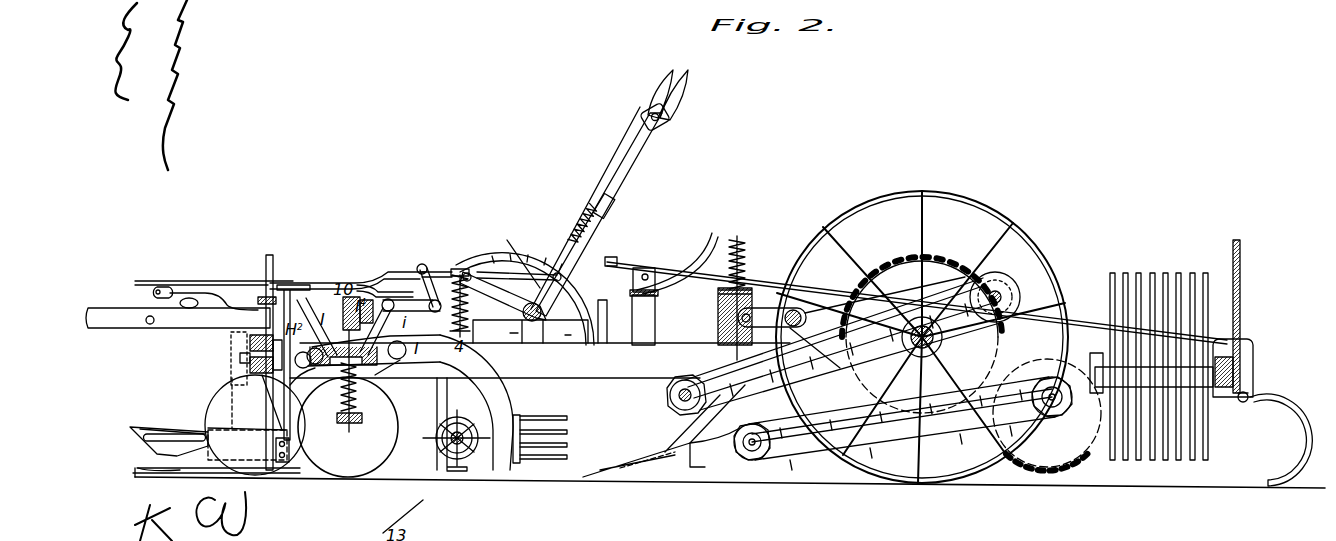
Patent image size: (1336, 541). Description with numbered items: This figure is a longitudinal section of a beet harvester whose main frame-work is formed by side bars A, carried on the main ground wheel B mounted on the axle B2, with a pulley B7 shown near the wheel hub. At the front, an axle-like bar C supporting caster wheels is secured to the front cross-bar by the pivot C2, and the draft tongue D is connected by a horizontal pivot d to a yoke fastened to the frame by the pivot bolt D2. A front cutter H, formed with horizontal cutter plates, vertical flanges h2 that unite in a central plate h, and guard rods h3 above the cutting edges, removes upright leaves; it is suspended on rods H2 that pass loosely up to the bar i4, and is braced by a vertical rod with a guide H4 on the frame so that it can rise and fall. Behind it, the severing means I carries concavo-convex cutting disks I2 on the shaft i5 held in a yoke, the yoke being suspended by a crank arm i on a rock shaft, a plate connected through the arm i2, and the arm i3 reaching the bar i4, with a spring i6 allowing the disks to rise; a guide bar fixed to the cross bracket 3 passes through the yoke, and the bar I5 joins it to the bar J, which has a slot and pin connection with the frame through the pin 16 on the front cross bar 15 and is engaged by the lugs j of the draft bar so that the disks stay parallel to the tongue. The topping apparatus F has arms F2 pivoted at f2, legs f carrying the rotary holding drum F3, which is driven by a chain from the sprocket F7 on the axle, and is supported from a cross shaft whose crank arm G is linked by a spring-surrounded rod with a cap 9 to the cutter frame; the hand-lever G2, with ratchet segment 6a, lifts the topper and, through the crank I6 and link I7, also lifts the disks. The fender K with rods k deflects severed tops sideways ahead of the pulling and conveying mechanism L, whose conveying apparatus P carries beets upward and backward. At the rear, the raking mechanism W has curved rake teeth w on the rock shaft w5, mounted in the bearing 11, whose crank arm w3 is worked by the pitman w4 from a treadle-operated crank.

The side bar A is at (540, 339).
The main ground wheel B is at (972, 210).
The axle B2 is at (922, 335).
The pulley B7 is at (925, 322).
The axle-like bar C is at (240, 372).
The pivot C2 is at (248, 350).
The tongue D is at (178, 304).
The pivot bolt D2 is at (258, 300).
The horizontal pivot d is at (147, 325).
The cutting or topping apparatus F is at (472, 478).
The arm F2 is at (391, 371).
The rotary holding or abutting device F3 is at (441, 448).
The sprocket F7 is at (443, 453).
The leg f is at (437, 395).
The pivot f2 is at (302, 377).
The lever or crank arm G is at (510, 296).
The hand-lever G2 is at (630, 172).
The ratchet segment 6a is at (525, 284).
The cutter H is at (206, 450).
The rod H2 is at (207, 466).
The brace H4 is at (235, 403).
The central longitudinally arranged plate h is at (133, 425).
The vertical flange h2 is at (150, 427).
The guard rod or finger h3 is at (175, 445).
The means for severing laterally extending leaves I is at (365, 478).
The cutting disk I2 is at (270, 470).
The bar I5 is at (384, 298).
The crank I6 is at (418, 268).
The link I7 is at (515, 251).
The crank arm i is at (352, 420).
The arm i2 is at (397, 339).
The arm i3 is at (317, 322).
The bar i4 is at (348, 285).
The shaft or bar i5 is at (357, 426).
The spring i6 is at (357, 387).
The bar J is at (180, 280).
The ear or lug j is at (156, 294).
The deflector or fender K is at (520, 410).
The rod k is at (567, 418).
The pulling and conveying mechanism L is at (730, 490).
The conveying apparatus P is at (833, 346).
The raking mechanism W is at (1182, 369).
The rake tooth w is at (1298, 418).
The crank arm w3 is at (1253, 362).
The pitman or link w4 is at (1080, 316).
The rock shaft w5 is at (1245, 403).
The cross bracket 3 is at (348, 283).
The spring cap 9 is at (470, 270).
The bearing 11 is at (1240, 403).
The front cross bar 15 is at (290, 288).
The pin 16 is at (274, 262).